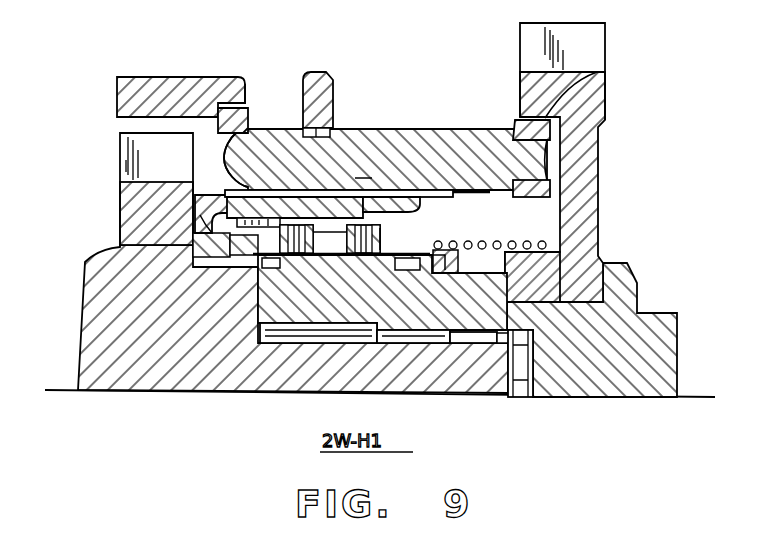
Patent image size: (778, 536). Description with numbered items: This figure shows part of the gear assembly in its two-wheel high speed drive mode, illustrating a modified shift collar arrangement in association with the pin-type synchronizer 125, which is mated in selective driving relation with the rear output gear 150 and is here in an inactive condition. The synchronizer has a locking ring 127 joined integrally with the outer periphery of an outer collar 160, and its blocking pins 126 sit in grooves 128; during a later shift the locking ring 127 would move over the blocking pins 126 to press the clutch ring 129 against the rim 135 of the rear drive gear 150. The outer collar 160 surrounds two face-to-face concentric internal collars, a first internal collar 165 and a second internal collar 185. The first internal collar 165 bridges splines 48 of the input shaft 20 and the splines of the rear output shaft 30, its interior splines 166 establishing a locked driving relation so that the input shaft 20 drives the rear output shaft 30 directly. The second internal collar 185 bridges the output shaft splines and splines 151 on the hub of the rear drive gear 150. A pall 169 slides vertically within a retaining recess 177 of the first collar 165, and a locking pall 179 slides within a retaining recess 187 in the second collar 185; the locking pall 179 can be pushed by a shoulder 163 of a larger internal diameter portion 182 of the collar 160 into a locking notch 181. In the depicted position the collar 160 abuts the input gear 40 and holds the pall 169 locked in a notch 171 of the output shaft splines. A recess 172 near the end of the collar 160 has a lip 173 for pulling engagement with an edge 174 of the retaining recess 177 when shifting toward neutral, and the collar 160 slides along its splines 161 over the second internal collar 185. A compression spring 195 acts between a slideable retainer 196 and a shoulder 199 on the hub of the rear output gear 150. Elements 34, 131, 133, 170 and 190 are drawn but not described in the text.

The input shaft 20 is at (244, 393).
The rear output shaft 30 is at (617, 397).
The upper plate 34 is at (150, 90).
The input gear 40 is at (119, 204).
The splines of the input shaft 48 is at (223, 283).
The pin-type synchronizer 125 is at (395, 112).
The blocking pins 126 is at (410, 133).
The locking ring 127 is at (330, 71).
The grooves 128 is at (305, 128).
The clutch ring 129 is at (513, 120).
The key block 131 is at (246, 105).
The plate end portion 133 is at (228, 105).
The rim of the rear drive gear 135 is at (597, 72).
The rear output gear 150 is at (598, 115).
The splines on the hub of the rear drive gear 151 is at (445, 274).
The outer collar 160 is at (360, 178).
The splines 161 is at (356, 189).
The shoulder 163 is at (358, 222).
The first internal collar 165 is at (193, 263).
The interior splines 166 is at (248, 283).
The pall 169 is at (340, 190).
The bolt 170 is at (292, 258).
The notch 171 is at (277, 263).
The recess 172 is at (193, 235).
The lip 173 is at (208, 220).
The edge of the retaining recess 174 is at (260, 218).
The retaining recess 177 is at (268, 188).
The locking pall 179 is at (378, 218).
The locking notch 181 is at (404, 260).
The larger internal diameter portion 182 is at (395, 190).
The second internal collar 185 is at (415, 226).
The retaining recess 187 is at (360, 256).
The coil spring 190 is at (457, 245).
The compression spring 195 is at (514, 242).
The slideable retainer 196 is at (437, 272).
The shoulder 199 is at (547, 244).